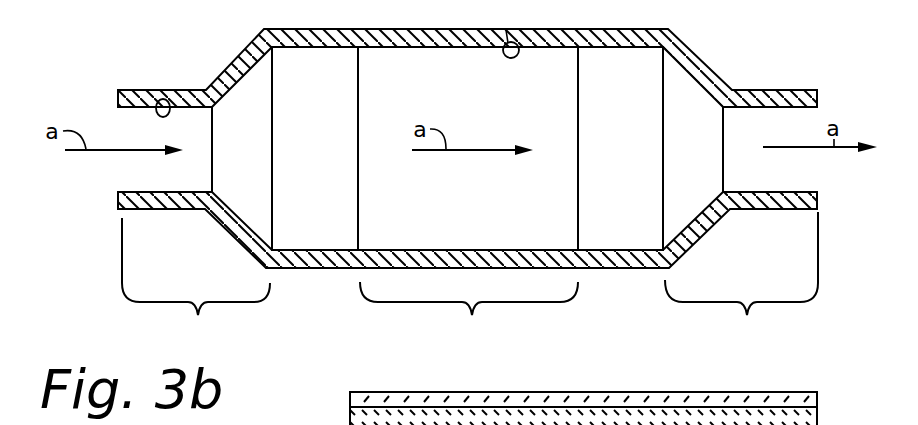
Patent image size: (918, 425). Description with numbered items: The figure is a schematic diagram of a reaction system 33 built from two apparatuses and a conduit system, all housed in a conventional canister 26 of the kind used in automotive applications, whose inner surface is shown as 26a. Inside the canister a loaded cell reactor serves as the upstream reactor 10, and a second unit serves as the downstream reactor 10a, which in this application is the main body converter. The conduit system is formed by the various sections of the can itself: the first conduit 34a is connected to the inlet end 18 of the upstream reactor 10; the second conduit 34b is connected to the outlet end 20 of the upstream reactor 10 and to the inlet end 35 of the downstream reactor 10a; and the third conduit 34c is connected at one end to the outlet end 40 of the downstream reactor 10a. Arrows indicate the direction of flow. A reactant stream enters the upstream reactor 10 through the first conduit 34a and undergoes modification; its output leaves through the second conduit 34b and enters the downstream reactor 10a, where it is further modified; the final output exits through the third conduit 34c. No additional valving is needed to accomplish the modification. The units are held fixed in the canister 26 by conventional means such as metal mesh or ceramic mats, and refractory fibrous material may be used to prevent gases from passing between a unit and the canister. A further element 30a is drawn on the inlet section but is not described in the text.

The upstream reactor 10 is at (334, 162).
The downstream reactor 10a is at (637, 161).
The inlet end 18 is at (272, 172).
The outlet end 20 is at (358, 92).
The canister 26 is at (442, 29).
The inner surface 26a is at (506, 30).
The inlet pipe opening 30a is at (163, 99).
The reaction system 33 is at (710, 17).
The inlet end 35 is at (578, 90).
The outlet end 40 is at (665, 118).
The first conduit 34a is at (196, 286).
The second conduit 34b is at (469, 318).
The third conduit 34c is at (741, 283).